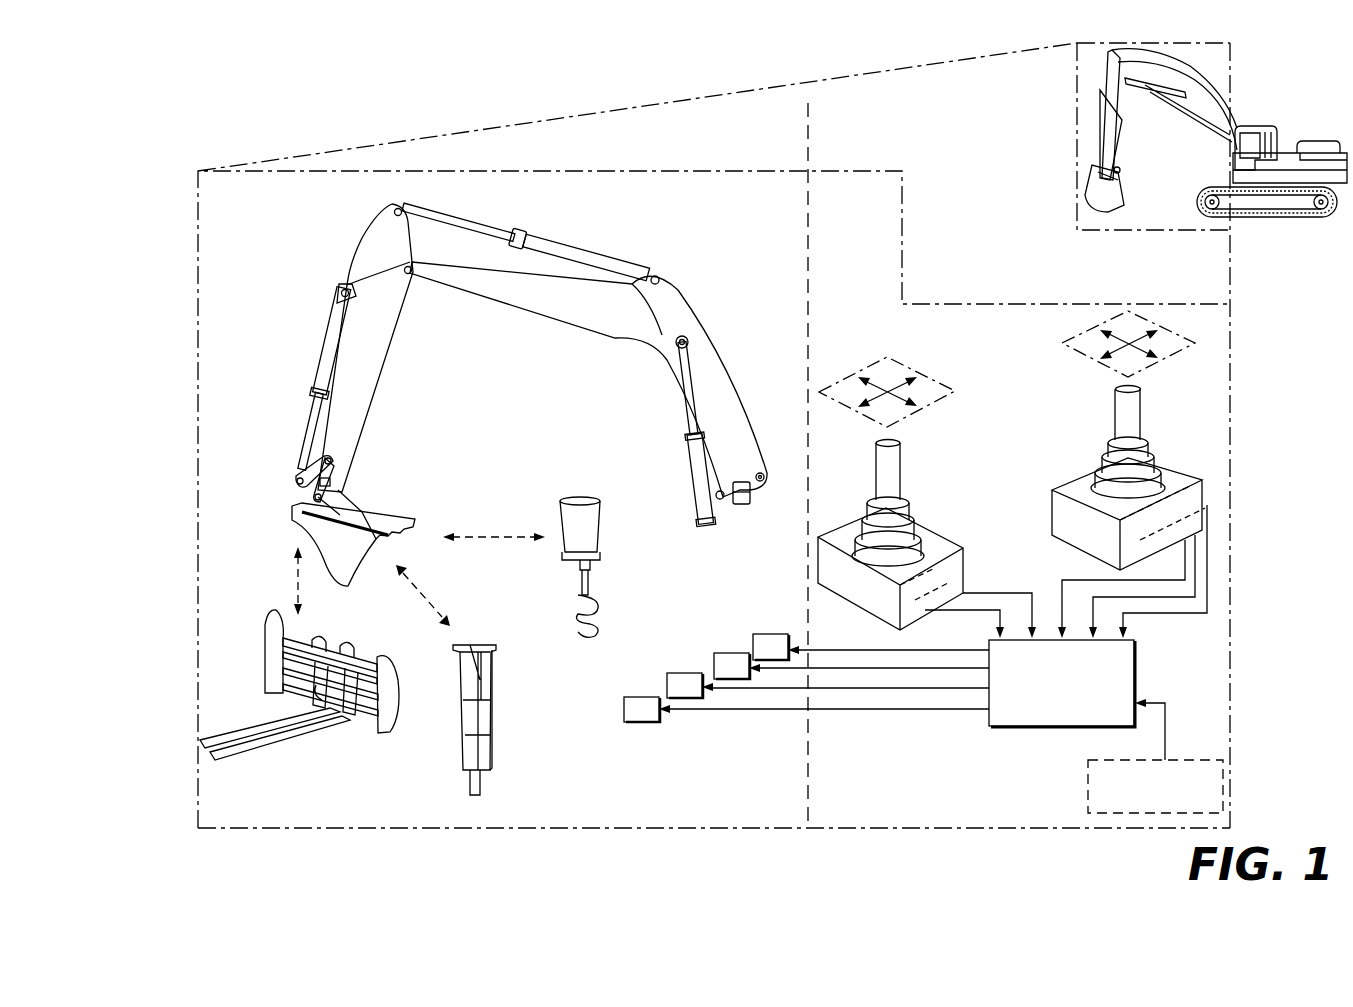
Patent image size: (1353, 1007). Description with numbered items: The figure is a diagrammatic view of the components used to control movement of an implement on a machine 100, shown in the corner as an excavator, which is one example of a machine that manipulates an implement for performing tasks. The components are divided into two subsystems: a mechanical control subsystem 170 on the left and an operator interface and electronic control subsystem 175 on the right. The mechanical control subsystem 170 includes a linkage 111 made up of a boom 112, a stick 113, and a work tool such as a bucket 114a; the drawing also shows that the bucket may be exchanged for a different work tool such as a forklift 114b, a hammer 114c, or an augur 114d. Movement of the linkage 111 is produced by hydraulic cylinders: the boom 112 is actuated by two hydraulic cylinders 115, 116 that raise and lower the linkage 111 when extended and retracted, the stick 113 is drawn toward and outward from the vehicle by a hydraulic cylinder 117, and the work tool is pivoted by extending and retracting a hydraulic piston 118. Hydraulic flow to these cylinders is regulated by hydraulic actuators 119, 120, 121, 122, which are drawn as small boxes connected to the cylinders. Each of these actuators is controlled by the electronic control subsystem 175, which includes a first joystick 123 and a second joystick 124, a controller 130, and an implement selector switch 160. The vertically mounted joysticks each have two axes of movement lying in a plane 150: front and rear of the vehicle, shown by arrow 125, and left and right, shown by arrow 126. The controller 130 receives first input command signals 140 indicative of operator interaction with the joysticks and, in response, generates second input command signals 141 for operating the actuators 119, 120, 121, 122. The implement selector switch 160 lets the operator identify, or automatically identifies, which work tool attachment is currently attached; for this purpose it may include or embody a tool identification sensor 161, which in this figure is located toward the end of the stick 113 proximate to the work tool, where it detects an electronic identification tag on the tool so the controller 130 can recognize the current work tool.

The machine 100 is at (1296, 217).
The linkage 111 is at (650, 234).
The boom 112 is at (722, 330).
The stick 113 is at (365, 426).
The bucket 114a is at (346, 588).
The forklift 114b is at (368, 732).
The hammer 114c is at (496, 684).
The augur 114d is at (608, 516).
The hydraulic cylinder 115 is at (702, 536).
The hydraulic cylinder 116 is at (753, 650).
The hydraulic cylinder 117 is at (548, 238).
The hydraulic piston 118 is at (335, 325).
The hydraulic actuator 119 is at (352, 291).
The hydraulic actuator 120 is at (657, 298).
The hydraulic actuator 121 is at (702, 590).
The hydraulic actuator 122 is at (742, 590).
The first joystick 123 is at (1150, 452).
The second joystick 124 is at (878, 472).
The arrow 125 is at (912, 404).
The arrow 126 is at (902, 382).
The controller 130 is at (1079, 698).
The first input command signals 140 is at (1000, 616).
The second input command signals 141 is at (912, 675).
The plane 150 is at (843, 403).
The implement selector switch 160 is at (1088, 784).
The tool identification sensor 161 is at (310, 462).
The mechanical control subsystem 170 is at (583, 163).
The operator interface and electronic control subsystem 175 is at (1015, 163).